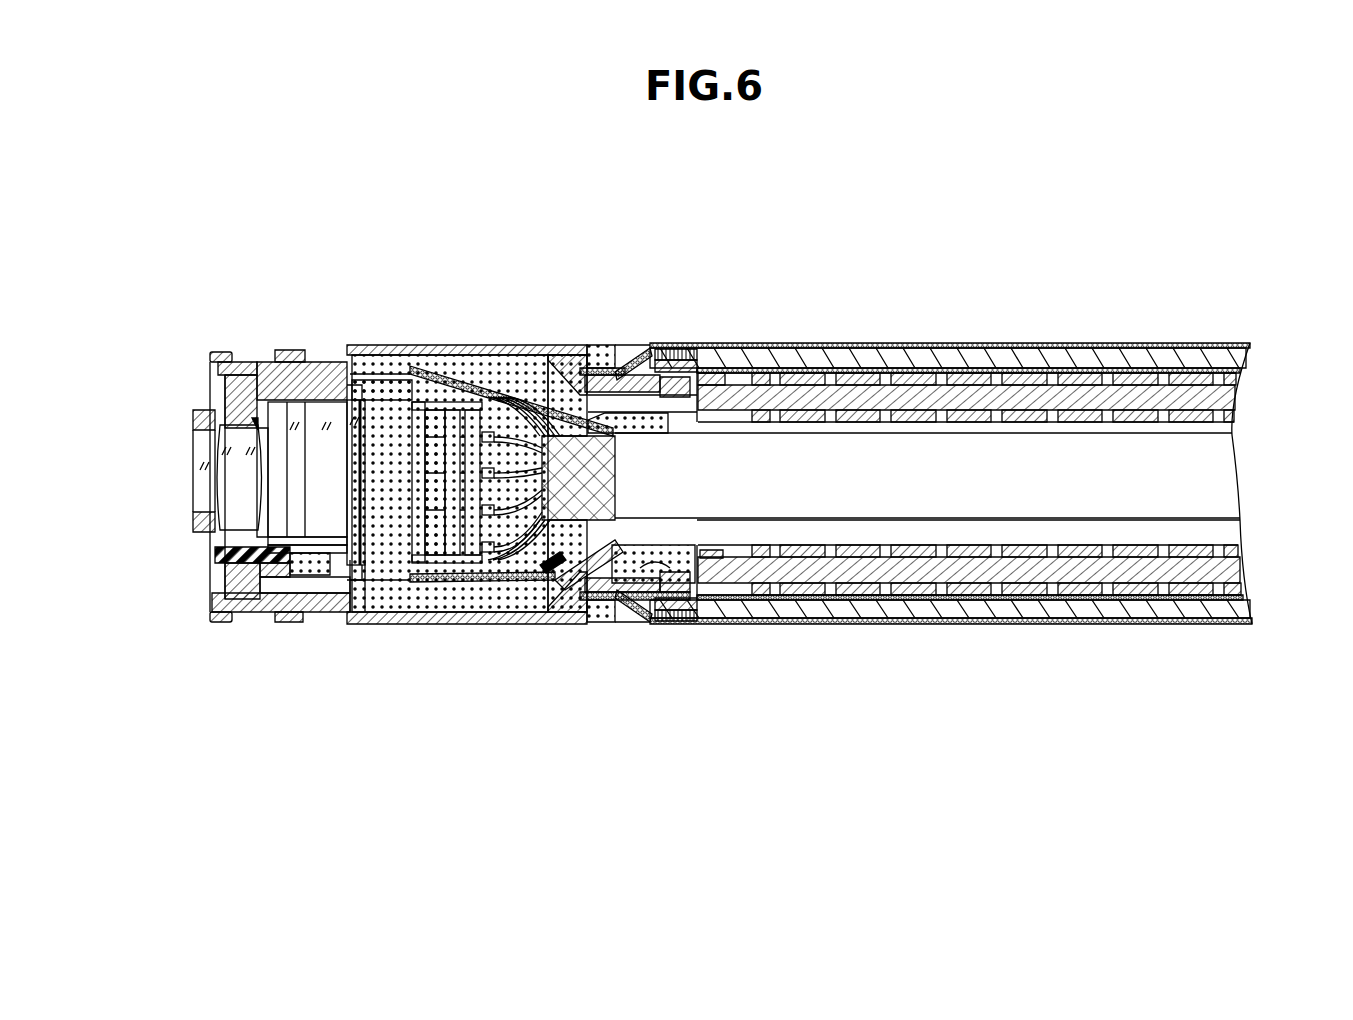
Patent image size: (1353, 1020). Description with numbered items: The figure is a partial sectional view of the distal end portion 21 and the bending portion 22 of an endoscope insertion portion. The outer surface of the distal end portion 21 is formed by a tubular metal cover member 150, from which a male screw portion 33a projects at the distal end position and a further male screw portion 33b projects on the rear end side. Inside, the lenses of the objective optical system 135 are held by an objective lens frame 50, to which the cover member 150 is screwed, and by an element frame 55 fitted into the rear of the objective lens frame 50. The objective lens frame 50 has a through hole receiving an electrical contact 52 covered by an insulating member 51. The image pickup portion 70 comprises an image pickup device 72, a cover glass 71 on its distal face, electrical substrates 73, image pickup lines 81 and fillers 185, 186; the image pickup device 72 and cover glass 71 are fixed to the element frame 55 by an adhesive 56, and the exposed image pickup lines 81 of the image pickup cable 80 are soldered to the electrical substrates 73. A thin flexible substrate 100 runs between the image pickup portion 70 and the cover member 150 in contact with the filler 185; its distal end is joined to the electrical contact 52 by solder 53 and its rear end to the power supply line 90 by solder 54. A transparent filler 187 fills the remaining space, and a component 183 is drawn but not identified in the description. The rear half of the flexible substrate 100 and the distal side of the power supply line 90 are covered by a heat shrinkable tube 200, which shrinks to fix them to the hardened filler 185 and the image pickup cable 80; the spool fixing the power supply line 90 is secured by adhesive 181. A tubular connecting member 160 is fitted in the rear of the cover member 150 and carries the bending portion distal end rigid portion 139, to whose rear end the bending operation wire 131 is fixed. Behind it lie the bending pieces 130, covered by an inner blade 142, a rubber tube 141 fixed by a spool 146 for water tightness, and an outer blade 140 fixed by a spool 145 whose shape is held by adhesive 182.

The distal end portion 21 is at (585, 238).
The bending portion 22 is at (1250, 238).
The male screw portion 33a is at (236, 393).
The male screw portion 33b is at (298, 392).
The objective lens frame 50 is at (240, 395).
The insulating member 51 is at (245, 622).
The electrical contact 52 is at (295, 628).
The solder 53 is at (322, 620).
The solder 54 is at (542, 620).
The element frame 55 is at (262, 380).
The adhesive 56 is at (347, 400).
The image pickup portion 70 is at (438, 277).
The cover glass 71 is at (392, 420).
The image pickup device 72 is at (425, 420).
The electrical substrates 73 is at (455, 415).
The image pickup cable 80 is at (982, 483).
The image pickup lines 81 is at (523, 407).
The power supply line 90 is at (657, 622).
The flexible substrate 100 is at (408, 560).
The bending pieces 130 is at (1062, 545).
The bending operation wire 131 is at (1240, 400).
The objective optical system 135 is at (270, 480).
The bending portion distal end rigid portion 139 is at (650, 350).
The outer blade 140 is at (965, 348).
The rubber tube 141 is at (1050, 358).
The inner blade 142 is at (1112, 368).
The spool 145 is at (620, 376).
The spool 146 is at (680, 362).
The cover member 150 is at (370, 620).
The connecting member 160 is at (586, 368).
The adhesive 181 is at (720, 622).
The adhesive 182 is at (593, 622).
The adhesive 183 is at (342, 620).
The filler 185 is at (560, 575).
The filler 186 is at (483, 405).
The filler 187 is at (355, 600).
The heat shrinkable tube 200 is at (473, 620).